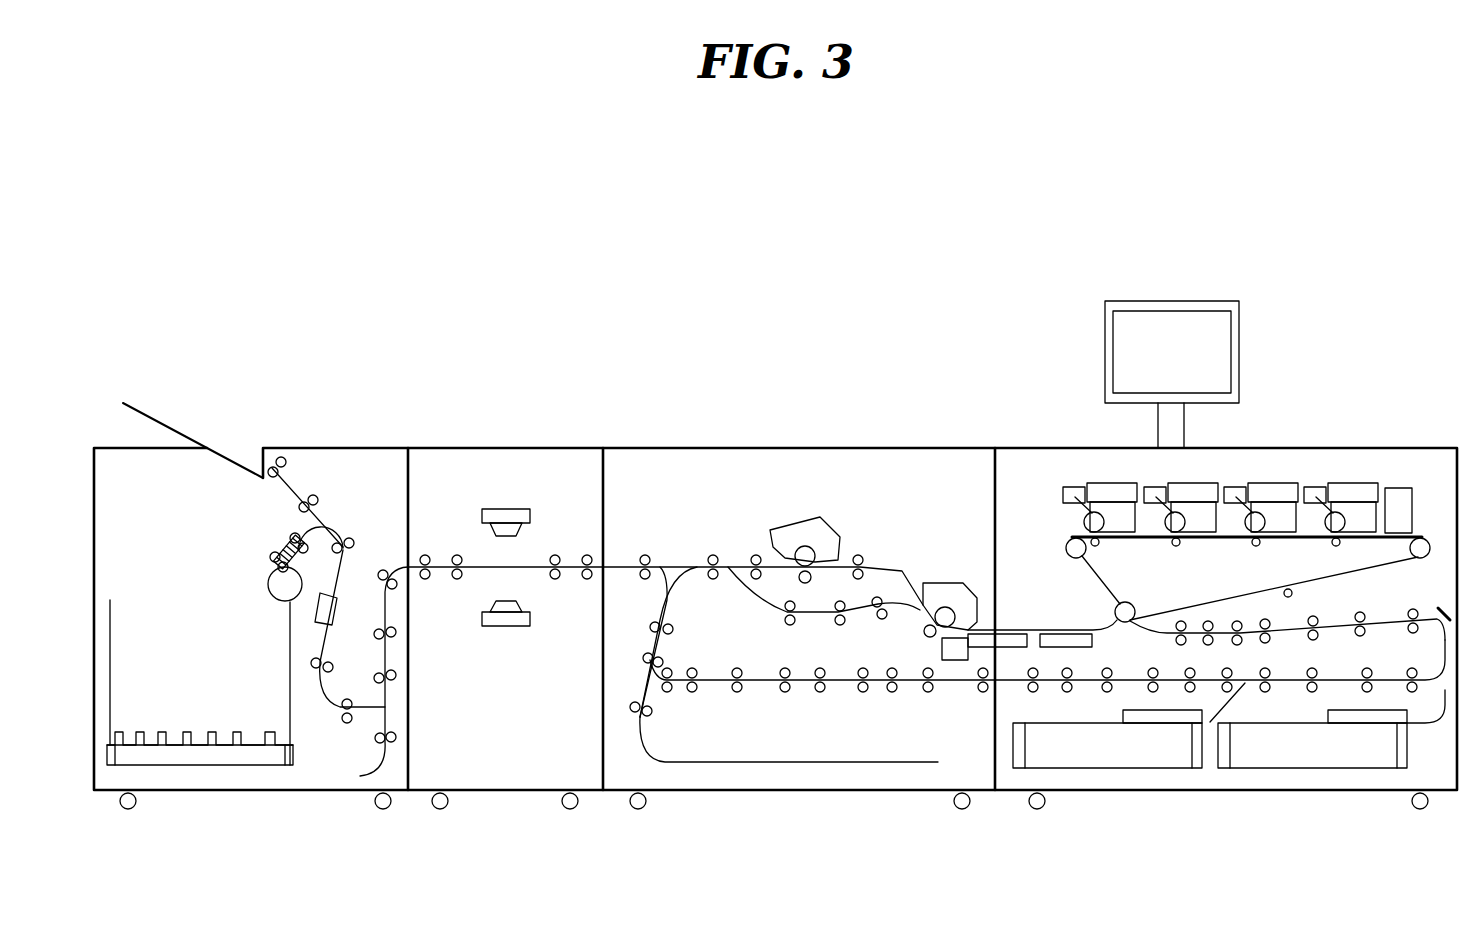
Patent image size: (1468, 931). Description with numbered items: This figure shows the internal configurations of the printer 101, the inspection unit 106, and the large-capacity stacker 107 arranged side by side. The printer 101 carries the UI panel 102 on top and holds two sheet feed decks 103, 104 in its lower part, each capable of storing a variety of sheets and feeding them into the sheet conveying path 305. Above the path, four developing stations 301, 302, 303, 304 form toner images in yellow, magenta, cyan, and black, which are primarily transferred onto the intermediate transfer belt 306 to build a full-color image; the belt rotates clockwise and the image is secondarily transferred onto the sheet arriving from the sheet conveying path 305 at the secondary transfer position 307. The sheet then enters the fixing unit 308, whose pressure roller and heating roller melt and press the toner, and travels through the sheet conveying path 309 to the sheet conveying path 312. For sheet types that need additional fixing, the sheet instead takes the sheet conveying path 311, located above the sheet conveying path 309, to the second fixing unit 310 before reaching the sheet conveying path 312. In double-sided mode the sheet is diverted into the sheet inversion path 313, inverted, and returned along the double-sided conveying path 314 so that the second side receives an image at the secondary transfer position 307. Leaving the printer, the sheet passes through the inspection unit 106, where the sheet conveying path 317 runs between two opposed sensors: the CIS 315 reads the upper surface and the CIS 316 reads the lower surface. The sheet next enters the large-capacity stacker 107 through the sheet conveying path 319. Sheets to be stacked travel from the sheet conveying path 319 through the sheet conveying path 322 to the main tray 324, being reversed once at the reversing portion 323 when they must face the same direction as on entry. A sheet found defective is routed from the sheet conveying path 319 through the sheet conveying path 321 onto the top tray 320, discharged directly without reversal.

The printer 101 is at (775, 793).
The UI panel 102 is at (1178, 300).
The sheet feed deck 103 is at (1140, 770).
The sheet feed deck 104 is at (1340, 770).
The inspection unit 106 is at (505, 793).
The large-capacity stacker 107 is at (325, 793).
The developing station 301 is at (1355, 482).
The developing station 302 is at (1270, 482).
The developing station 303 is at (1192, 482).
The developing station 304 is at (1112, 482).
The sheet conveying path 305 is at (1385, 622).
The intermediate transfer belt 306 is at (1200, 608).
The secondary transfer position 307 is at (1117, 598).
The fixing unit 308 is at (942, 582).
The sheet conveying path 309 is at (748, 592).
The second fixing unit 310 is at (800, 525).
The sheet conveying path 311 is at (740, 565).
The sheet conveying path 312 is at (620, 567).
The sheet inversion path 313 is at (732, 762).
The double-sided conveying path 314 is at (950, 687).
The CIS 315 is at (513, 508).
The CIS 316 is at (517, 628).
The sheet conveying path 317 is at (480, 566).
The sheet conveying path 319 is at (333, 692).
The top tray 320 is at (190, 425).
The sheet conveying path 321 is at (293, 474).
The sheet conveying path 322 is at (312, 527).
The reversing portion 323 is at (383, 765).
The main tray 324 is at (132, 709).